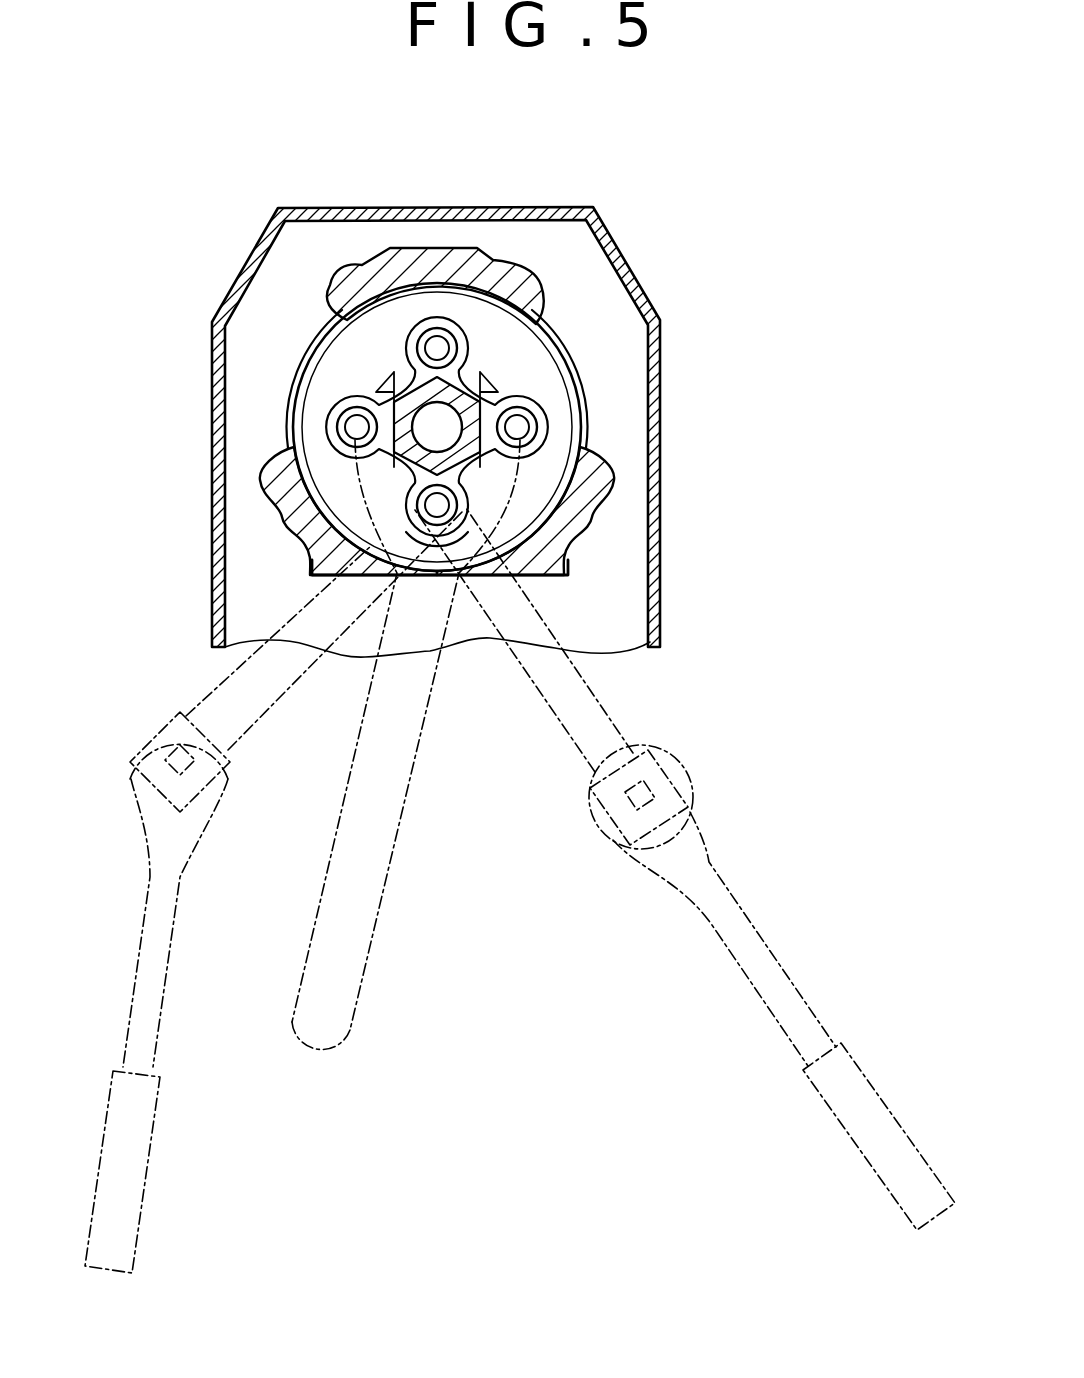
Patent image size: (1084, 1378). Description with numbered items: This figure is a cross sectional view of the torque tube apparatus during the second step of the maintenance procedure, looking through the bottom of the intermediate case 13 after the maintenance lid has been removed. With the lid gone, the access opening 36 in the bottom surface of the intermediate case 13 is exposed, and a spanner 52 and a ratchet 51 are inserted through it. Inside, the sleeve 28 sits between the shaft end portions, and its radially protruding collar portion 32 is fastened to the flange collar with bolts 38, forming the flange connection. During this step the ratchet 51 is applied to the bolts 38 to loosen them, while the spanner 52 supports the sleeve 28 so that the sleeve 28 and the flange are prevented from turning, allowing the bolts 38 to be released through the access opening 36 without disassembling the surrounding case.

The intermediate case 13 is at (578, 503).
The sleeve 28 is at (403, 408).
The collar portion 32 is at (517, 430).
The access opening 36 is at (527, 575).
The bolts 38 is at (440, 505).
The ratchet 51 is at (145, 1198).
The spanner 52 is at (358, 1002).